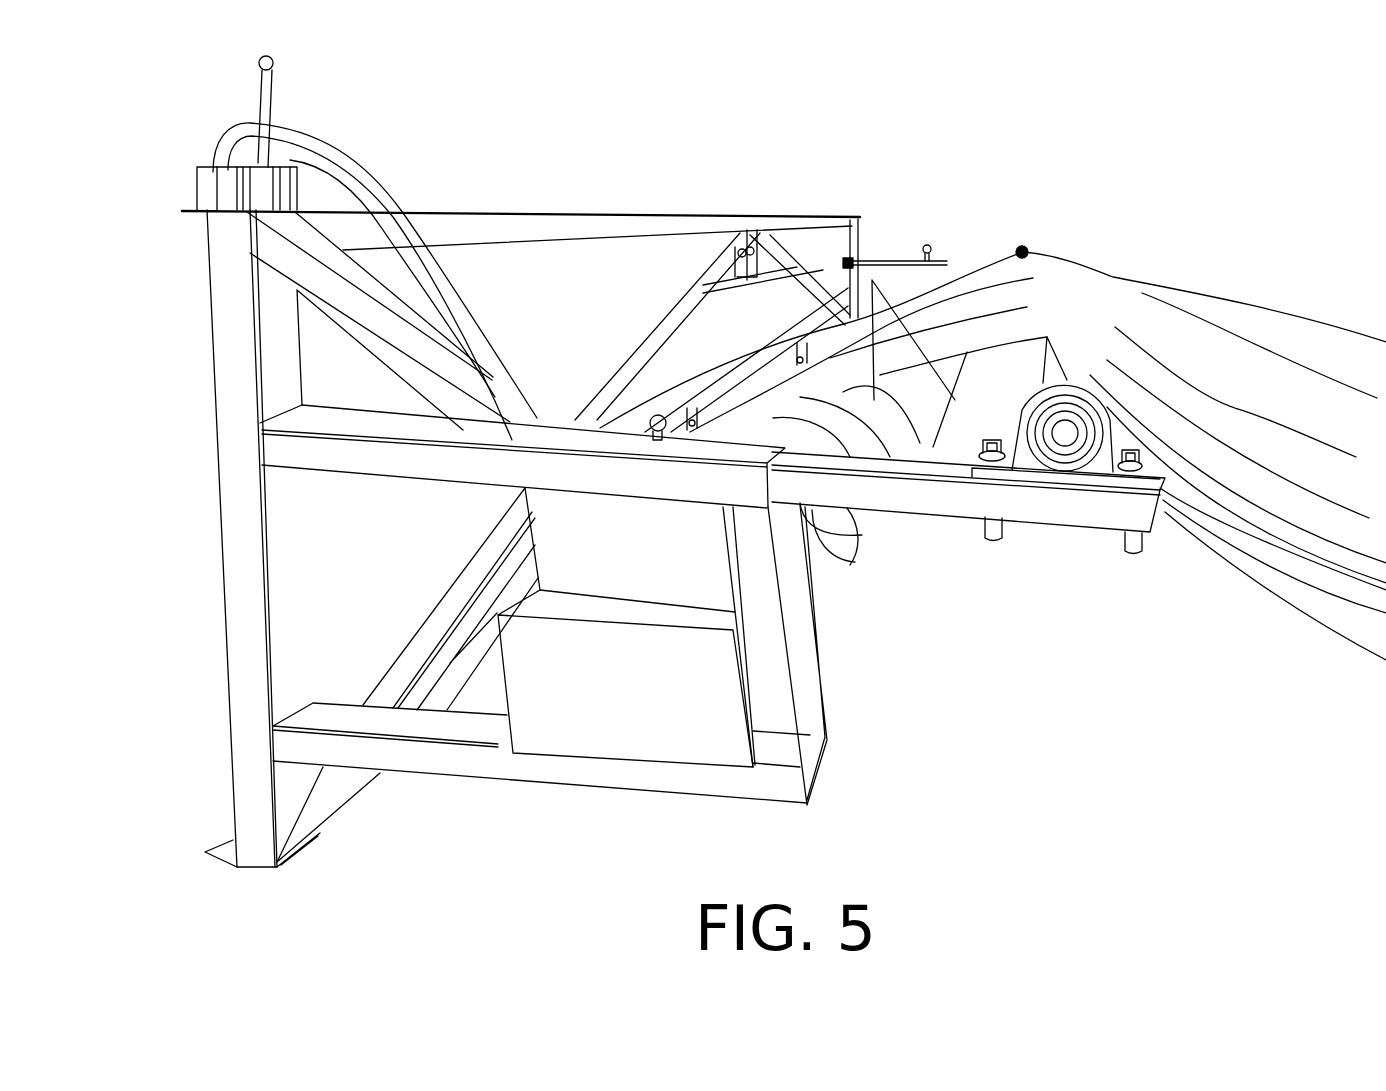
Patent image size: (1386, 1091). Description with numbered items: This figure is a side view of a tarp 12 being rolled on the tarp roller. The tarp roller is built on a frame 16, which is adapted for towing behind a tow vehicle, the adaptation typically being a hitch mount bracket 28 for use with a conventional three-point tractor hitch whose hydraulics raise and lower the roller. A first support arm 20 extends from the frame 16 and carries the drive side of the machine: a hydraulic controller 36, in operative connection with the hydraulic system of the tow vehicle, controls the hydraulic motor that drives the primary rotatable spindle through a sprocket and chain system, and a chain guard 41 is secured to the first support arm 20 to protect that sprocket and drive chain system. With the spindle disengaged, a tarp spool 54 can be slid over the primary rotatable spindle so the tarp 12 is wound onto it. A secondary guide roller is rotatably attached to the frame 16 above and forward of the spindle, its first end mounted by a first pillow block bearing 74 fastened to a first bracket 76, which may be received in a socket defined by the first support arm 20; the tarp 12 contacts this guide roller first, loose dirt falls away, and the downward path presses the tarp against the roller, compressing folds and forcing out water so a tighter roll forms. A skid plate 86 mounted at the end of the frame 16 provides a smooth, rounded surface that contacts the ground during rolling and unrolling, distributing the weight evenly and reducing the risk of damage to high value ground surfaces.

The tarp 12 is at (1240, 310).
The frame 16 is at (652, 212).
The first support arm 20 is at (433, 468).
The hitch mount bracket 28 is at (745, 230).
The hydraulic controller 36 is at (212, 172).
The chain guard 41 is at (703, 733).
The tarp spool 54 is at (810, 530).
The first pillow block bearing 74 is at (1098, 445).
The first bracket 76 is at (1040, 502).
The skid plate 86 is at (232, 852).